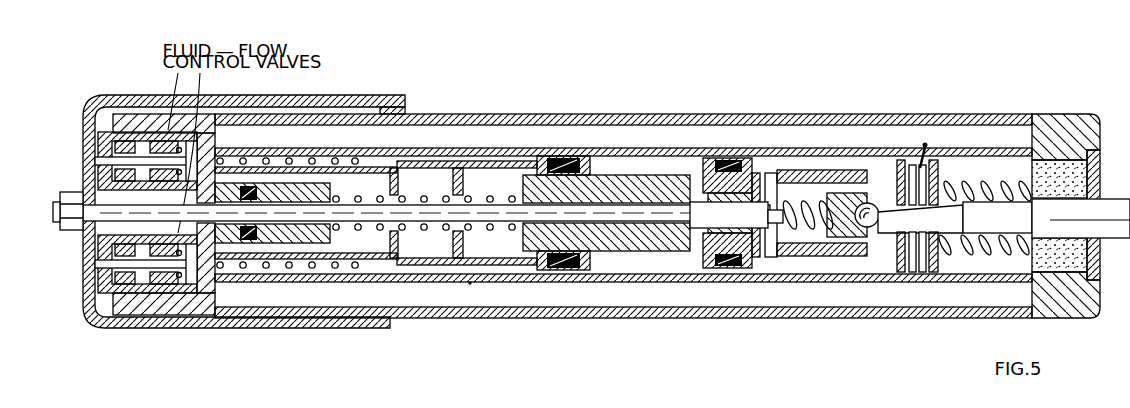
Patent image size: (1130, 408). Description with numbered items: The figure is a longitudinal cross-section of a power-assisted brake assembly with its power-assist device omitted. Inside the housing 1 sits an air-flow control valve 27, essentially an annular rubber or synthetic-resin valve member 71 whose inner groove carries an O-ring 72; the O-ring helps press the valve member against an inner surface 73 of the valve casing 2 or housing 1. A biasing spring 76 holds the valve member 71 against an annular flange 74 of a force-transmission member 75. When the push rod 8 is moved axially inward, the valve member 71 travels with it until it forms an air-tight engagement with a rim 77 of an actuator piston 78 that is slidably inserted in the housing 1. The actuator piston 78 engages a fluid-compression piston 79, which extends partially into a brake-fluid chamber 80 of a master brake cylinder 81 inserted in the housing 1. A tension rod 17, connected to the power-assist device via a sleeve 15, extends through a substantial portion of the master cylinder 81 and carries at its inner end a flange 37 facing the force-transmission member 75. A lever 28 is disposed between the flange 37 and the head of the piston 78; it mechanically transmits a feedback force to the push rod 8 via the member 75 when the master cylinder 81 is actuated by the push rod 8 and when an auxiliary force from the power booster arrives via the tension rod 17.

The housing 1 is at (623, 195).
The valve casing 2 is at (990, 114).
The push rod 8 is at (1117, 212).
The sleeve 15 is at (253, 328).
The tension rod 17 is at (85, 236).
The air-flow control valve 27 is at (925, 143).
The lever 28 is at (772, 262).
The flange 37 is at (777, 200).
The valve member 71 is at (940, 168).
The O-ring 72 is at (985, 149).
The inner surface 73 is at (1003, 258).
The annular flange 74 is at (880, 242).
The force-transmission member 75 is at (841, 237).
The biasing spring 76 is at (967, 237).
The rim 77 is at (903, 162).
The actuator piston 78 is at (817, 170).
The fluid-compression piston 79 is at (652, 175).
The brake-fluid chamber 80 is at (502, 180).
The master brake cylinder 81 is at (470, 283).